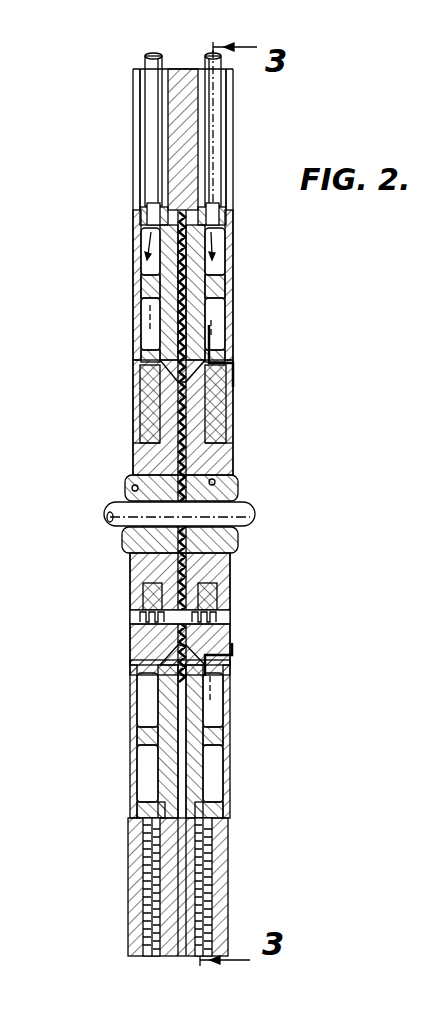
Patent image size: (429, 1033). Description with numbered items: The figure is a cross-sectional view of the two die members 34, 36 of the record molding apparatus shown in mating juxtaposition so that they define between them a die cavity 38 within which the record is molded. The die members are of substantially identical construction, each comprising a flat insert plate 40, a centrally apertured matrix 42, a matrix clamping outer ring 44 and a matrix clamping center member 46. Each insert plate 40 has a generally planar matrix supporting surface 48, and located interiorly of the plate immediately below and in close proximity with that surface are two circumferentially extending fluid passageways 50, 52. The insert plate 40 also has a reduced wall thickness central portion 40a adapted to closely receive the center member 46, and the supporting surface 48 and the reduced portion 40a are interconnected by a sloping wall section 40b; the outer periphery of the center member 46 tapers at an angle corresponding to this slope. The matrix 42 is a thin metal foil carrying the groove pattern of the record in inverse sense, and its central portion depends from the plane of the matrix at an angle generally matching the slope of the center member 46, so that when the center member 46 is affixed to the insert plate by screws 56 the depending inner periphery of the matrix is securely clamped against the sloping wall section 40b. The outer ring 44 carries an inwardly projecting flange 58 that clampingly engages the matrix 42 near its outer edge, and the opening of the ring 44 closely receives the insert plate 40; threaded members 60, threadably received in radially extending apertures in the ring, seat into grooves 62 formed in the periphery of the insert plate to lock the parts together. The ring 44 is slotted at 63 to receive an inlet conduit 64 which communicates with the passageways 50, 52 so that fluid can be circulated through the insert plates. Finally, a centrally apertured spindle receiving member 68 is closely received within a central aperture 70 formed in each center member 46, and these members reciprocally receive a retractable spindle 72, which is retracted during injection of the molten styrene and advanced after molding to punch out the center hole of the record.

The die member 34 is at (128, 405).
The die member 36 is at (240, 406).
The die cavity 38 is at (185, 388).
The insert plate 40 is at (135, 647).
The reduced wall thickness central portion 40a is at (145, 424).
The sloping wall section 40b is at (135, 369).
The matrix 42 is at (175, 288).
The matrix clamping outer ring 44 is at (138, 870).
The matrix clamping center member 46 is at (145, 565).
The matrix supporting surface 48 is at (160, 733).
The fluid passageway 50 is at (147, 697).
The fluid passageway 52 is at (147, 771).
The screw 56 is at (133, 619).
The inwardly projecting flange 58 is at (150, 213).
The threaded member 60 is at (150, 885).
The groove 62 is at (138, 812).
The slot 63 is at (140, 158).
The inlet conduit 64 is at (160, 123).
The spindle receiving member 68 is at (124, 540).
The central aperture 70 is at (132, 489).
The retractable spindle 72 is at (255, 506).